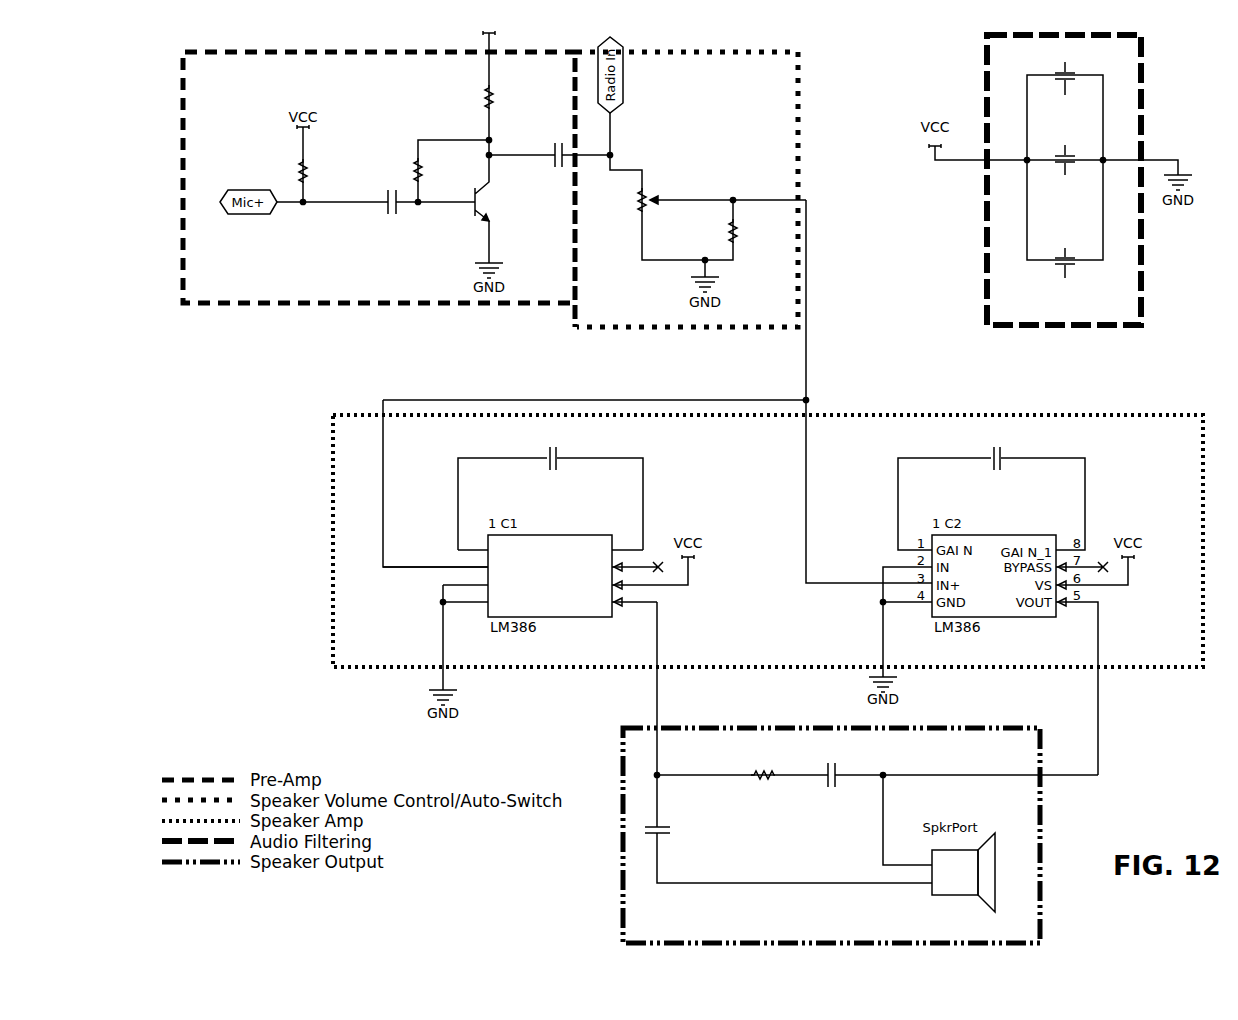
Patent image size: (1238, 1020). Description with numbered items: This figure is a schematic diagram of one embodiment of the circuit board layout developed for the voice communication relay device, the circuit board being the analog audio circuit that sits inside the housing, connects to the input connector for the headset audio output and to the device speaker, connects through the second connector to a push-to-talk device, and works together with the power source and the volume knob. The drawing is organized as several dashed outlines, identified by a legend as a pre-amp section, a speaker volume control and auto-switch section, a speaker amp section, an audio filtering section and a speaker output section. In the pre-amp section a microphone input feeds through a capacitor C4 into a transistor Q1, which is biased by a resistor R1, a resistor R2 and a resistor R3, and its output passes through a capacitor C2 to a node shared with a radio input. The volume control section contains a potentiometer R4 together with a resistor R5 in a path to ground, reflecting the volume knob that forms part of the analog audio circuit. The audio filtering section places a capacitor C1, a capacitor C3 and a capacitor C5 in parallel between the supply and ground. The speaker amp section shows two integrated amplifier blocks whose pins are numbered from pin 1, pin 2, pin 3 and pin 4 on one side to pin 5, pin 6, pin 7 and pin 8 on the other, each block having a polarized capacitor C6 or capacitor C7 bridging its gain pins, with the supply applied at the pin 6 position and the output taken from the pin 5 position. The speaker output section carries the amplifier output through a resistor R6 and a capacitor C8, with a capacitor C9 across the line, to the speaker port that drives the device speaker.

The LM386 pin 1 (GAIN) 1 is at (493, 547).
The LM386 pin 2 (IN) 2 is at (444, 564).
The LM386 pin 3 (IN+) 3 is at (479, 582).
The LM386 pin 4 (GND) 4 is at (482, 599).
The LM386 pin 5 (VOUT) 5 is at (614, 599).
The LM386 pin 6 (VS) 6 is at (639, 575).
The LM386 pin 7 (BYPASS) 7 is at (611, 564).
The LM386 pin 8 (GAIN_1) 8 is at (600, 548).
The resistor 10K R1 is at (506, 93).
The resistor 10K R2 is at (321, 164).
The resistor 100K R3 is at (451, 171).
The potentiometer 500K R4 is at (685, 191).
The resistor 100K R5 is at (752, 228).
The resistor 10 R6 is at (763, 781).
The capacitor 22uF C1 is at (1065, 82).
The capacitor .1uF C2 is at (558, 162).
The capacitor 22uF C3 is at (1065, 166).
The capacitor .1uF C4 is at (392, 217).
The capacitor 220uF C5 is at (1065, 269).
The polarized capacitor 10uF C6 is at (550, 487).
The polarized capacitor 10uF C7 is at (991, 487).
The capacitor 47uF C8 is at (828, 781).
The capacitor 220UF C9 is at (685, 842).
The transistor 2N3904 Q1 is at (511, 209).